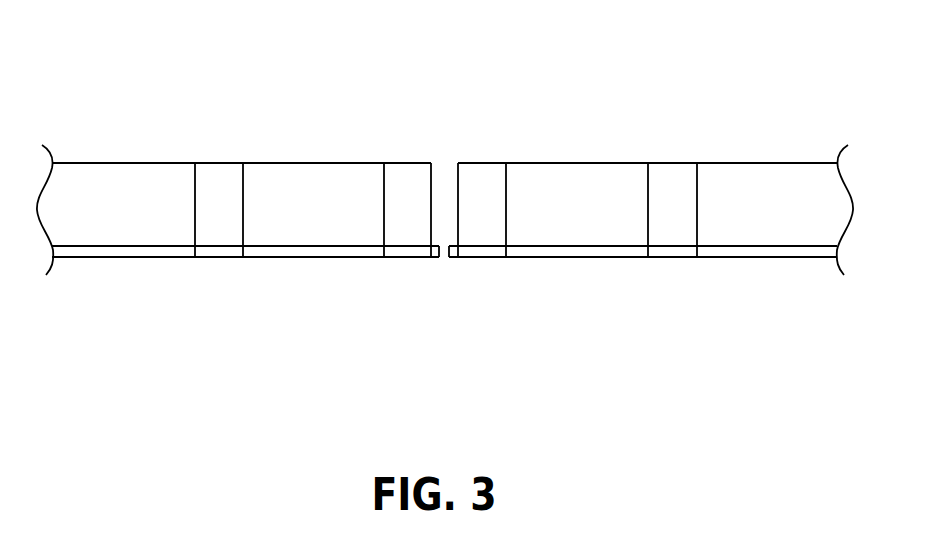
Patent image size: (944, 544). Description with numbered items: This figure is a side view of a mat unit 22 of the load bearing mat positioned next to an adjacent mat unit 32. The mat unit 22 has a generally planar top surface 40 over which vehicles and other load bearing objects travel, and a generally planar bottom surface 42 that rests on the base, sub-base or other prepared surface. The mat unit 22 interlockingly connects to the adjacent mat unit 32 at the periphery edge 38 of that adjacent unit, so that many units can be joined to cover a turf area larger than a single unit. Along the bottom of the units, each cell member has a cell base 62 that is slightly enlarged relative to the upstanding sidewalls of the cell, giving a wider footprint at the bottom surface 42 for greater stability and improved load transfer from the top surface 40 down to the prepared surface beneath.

The mat unit 22 is at (347, 138).
The top surface 40 is at (278, 146).
The periphery edge 38 is at (462, 147).
The bottom surface 42 is at (217, 274).
The cell base 62 is at (312, 252).
The adjacent mat unit 32 is at (568, 274).